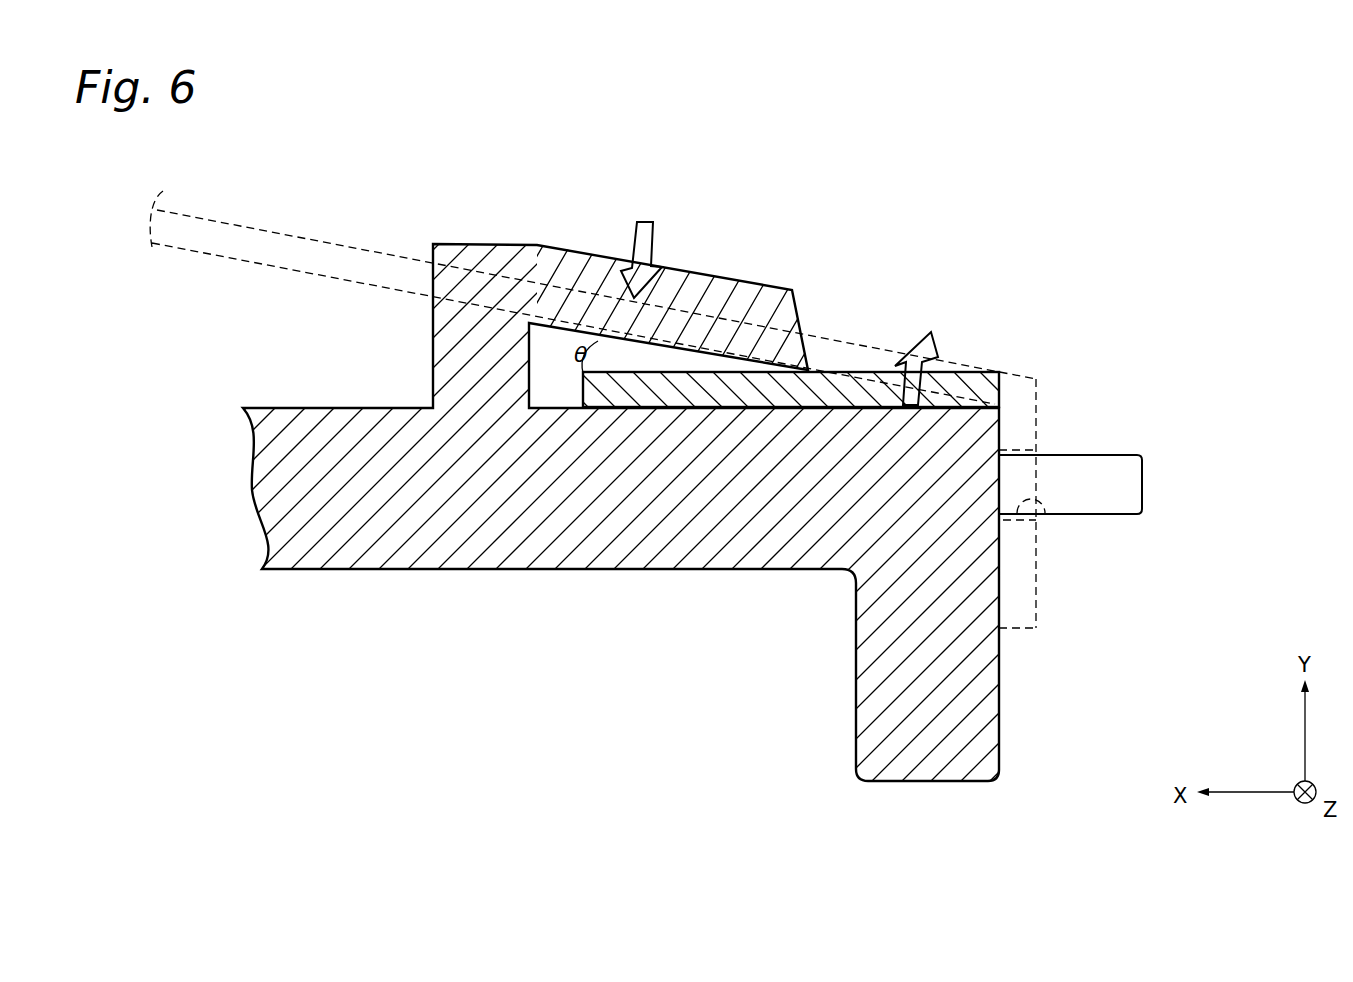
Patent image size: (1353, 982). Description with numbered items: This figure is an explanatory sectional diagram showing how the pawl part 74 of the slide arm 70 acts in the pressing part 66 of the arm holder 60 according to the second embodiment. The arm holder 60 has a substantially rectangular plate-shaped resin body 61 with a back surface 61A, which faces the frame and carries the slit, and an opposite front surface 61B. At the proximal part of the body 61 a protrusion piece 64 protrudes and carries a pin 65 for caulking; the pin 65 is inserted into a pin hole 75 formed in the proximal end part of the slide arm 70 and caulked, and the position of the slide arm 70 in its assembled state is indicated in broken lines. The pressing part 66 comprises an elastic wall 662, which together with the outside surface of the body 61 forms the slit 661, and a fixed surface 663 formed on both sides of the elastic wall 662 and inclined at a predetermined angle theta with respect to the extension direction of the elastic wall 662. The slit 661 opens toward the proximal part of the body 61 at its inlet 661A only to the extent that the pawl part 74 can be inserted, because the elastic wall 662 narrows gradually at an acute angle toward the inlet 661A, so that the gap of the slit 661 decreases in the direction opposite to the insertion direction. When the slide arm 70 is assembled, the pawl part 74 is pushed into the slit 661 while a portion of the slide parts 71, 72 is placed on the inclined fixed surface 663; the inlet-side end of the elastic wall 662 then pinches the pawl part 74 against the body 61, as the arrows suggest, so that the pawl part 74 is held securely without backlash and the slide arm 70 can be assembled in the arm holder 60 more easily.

The arm holder 60 is at (208, 530).
The body 61 is at (462, 548).
The back surface 61A is at (264, 400).
The front surface 61B is at (347, 576).
The protrusion piece 64 is at (878, 733).
The pin 65 is at (1125, 483).
The pressing part 66 is at (730, 232).
The slit 661 is at (663, 360).
The inlet 661A is at (807, 372).
The elastic wall 662 is at (590, 268).
The fixed surface 663 is at (550, 325).
The slide arm 70 is at (1036, 593).
The slide part 71 is at (253, 226).
The slide part 72 is at (253, 226).
The pawl part 74 is at (745, 393).
The pin hole 75 is at (1045, 513).